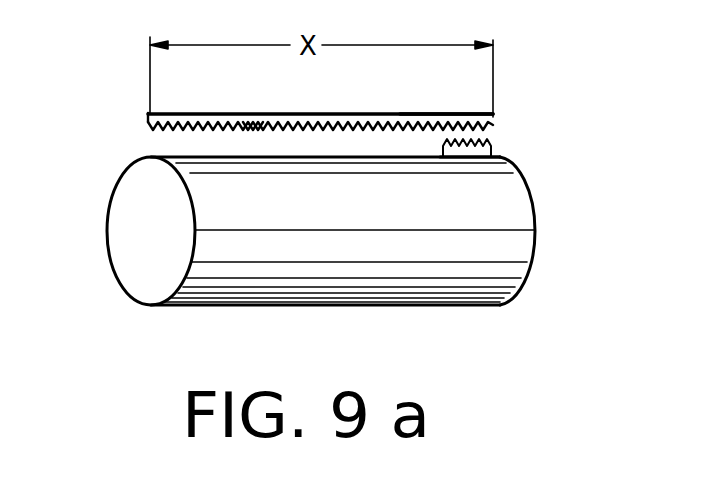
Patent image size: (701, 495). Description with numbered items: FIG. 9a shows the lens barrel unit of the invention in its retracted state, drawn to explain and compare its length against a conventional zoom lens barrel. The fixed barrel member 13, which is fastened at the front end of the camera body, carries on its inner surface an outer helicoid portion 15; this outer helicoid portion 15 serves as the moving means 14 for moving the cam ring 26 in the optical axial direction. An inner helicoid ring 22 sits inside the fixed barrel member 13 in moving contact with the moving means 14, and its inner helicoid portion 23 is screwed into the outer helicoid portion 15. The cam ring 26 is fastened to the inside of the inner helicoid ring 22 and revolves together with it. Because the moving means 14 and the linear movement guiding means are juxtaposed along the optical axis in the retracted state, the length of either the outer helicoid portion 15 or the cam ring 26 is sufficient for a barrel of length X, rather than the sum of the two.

The fixed barrel member 13 is at (198, 112).
The moving means 14 is at (432, 110).
The outer helicoid portion 15 is at (255, 120).
The inner helicoid ring 22 is at (497, 147).
The inner helicoid portion 23 is at (490, 135).
The cam ring 26 is at (128, 170).